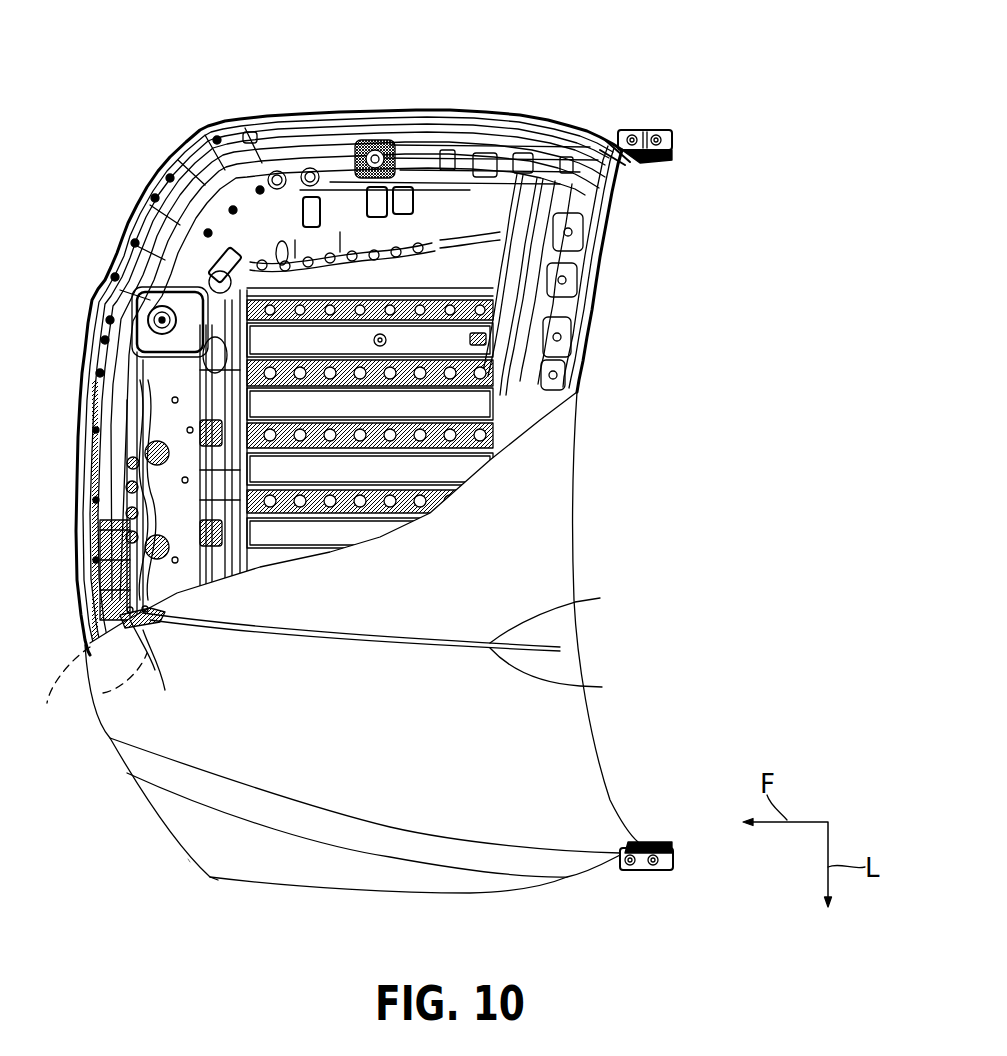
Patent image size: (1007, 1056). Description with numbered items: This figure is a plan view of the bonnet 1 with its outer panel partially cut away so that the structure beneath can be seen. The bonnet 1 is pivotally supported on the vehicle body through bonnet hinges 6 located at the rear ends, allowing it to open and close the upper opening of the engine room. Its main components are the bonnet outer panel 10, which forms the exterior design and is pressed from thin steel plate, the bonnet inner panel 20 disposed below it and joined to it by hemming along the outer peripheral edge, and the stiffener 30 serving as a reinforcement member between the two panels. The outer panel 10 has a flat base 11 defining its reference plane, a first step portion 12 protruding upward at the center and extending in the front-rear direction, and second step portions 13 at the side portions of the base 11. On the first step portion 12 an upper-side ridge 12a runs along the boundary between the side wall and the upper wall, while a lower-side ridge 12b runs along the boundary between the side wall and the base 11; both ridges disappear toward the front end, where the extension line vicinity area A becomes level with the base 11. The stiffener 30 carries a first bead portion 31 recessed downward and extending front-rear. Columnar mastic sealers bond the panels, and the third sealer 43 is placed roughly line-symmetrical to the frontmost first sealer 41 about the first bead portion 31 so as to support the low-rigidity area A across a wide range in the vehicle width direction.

The bonnet 1 is at (150, 100).
The bonnet hinge 6 is at (655, 130).
The bonnet outer panel 10 is at (185, 865).
The base 11 is at (583, 777).
The first step portion 12 is at (540, 517).
The upper-side ridge 12a is at (399, 615).
The lower-side ridge 12b is at (404, 662).
The second step portion 13 is at (397, 883).
The bonnet inner panel 20 is at (132, 212).
The stiffener 30 is at (130, 282).
The first bead portion 31 is at (143, 630).
The first sealer 41 is at (125, 595).
The third sealer 43 is at (133, 630).
The extension line vicinity area A is at (86, 688).